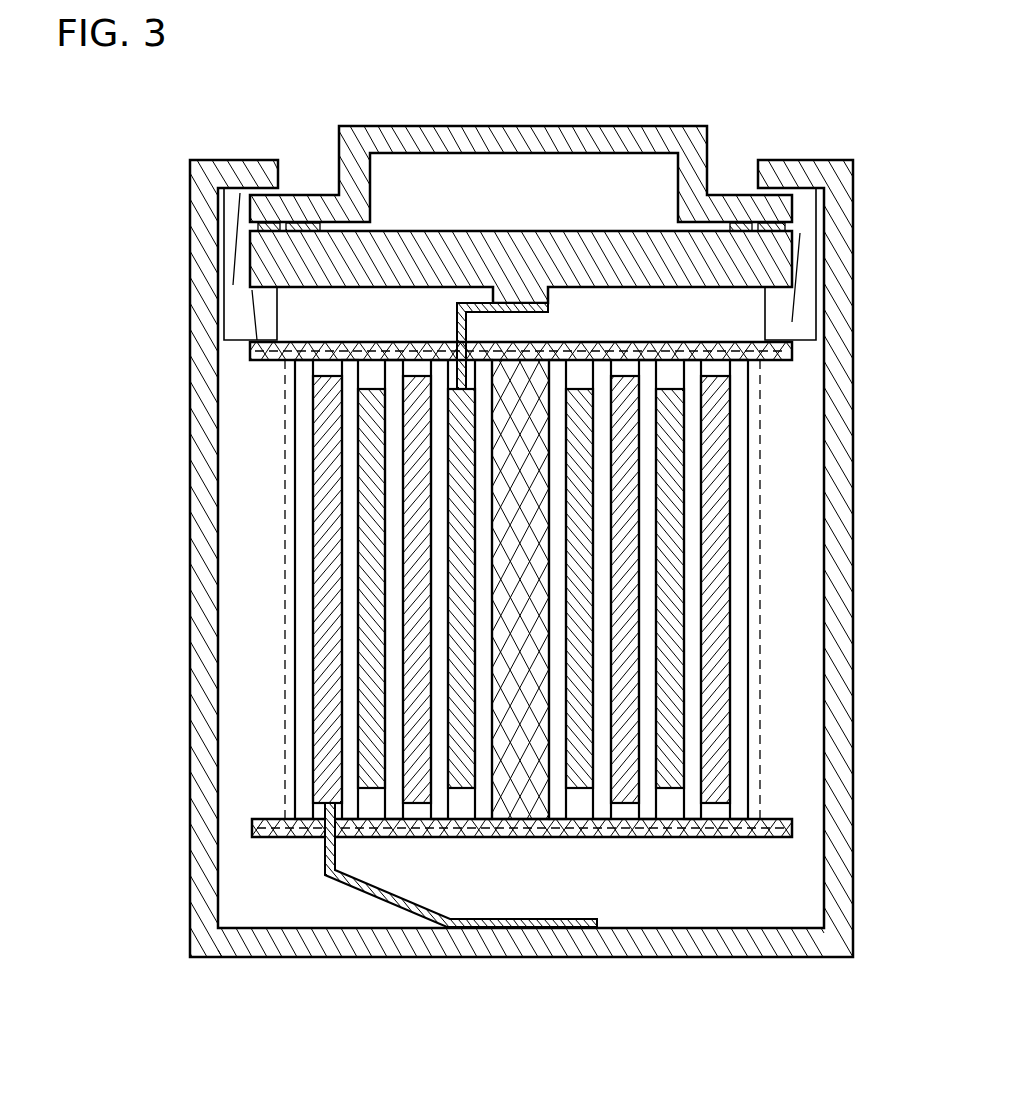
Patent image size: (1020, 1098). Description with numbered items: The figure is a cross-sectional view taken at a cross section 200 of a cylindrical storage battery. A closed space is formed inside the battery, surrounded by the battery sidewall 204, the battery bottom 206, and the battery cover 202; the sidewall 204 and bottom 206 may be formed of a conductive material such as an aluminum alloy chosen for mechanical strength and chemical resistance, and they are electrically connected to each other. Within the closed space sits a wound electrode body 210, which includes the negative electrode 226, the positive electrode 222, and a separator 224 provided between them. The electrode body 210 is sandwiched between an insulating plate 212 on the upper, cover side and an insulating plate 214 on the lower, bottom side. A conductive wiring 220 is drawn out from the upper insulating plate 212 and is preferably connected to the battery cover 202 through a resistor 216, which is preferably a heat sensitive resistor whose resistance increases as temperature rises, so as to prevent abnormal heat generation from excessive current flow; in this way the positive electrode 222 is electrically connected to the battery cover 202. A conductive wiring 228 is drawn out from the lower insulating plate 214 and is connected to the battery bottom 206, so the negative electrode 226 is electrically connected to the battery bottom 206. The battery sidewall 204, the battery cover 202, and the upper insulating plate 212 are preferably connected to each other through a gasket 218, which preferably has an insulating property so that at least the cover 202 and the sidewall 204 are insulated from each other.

The cross section 200 is at (501, 539).
The battery cover 202 is at (470, 145).
The battery sidewall 204 is at (208, 160).
The battery bottom 206 is at (577, 957).
The electrode body 210 is at (514, 585).
The insulating plate 212 is at (775, 352).
The insulating plate 214 is at (253, 822).
The resistor 216 is at (765, 230).
The gasket 218 is at (800, 233).
The conductive wiring 220 is at (492, 305).
The positive electrode 222 is at (362, 747).
The separator 224 is at (355, 653).
The negative electrode 226 is at (332, 553).
The conductive wiring 228 is at (485, 925).